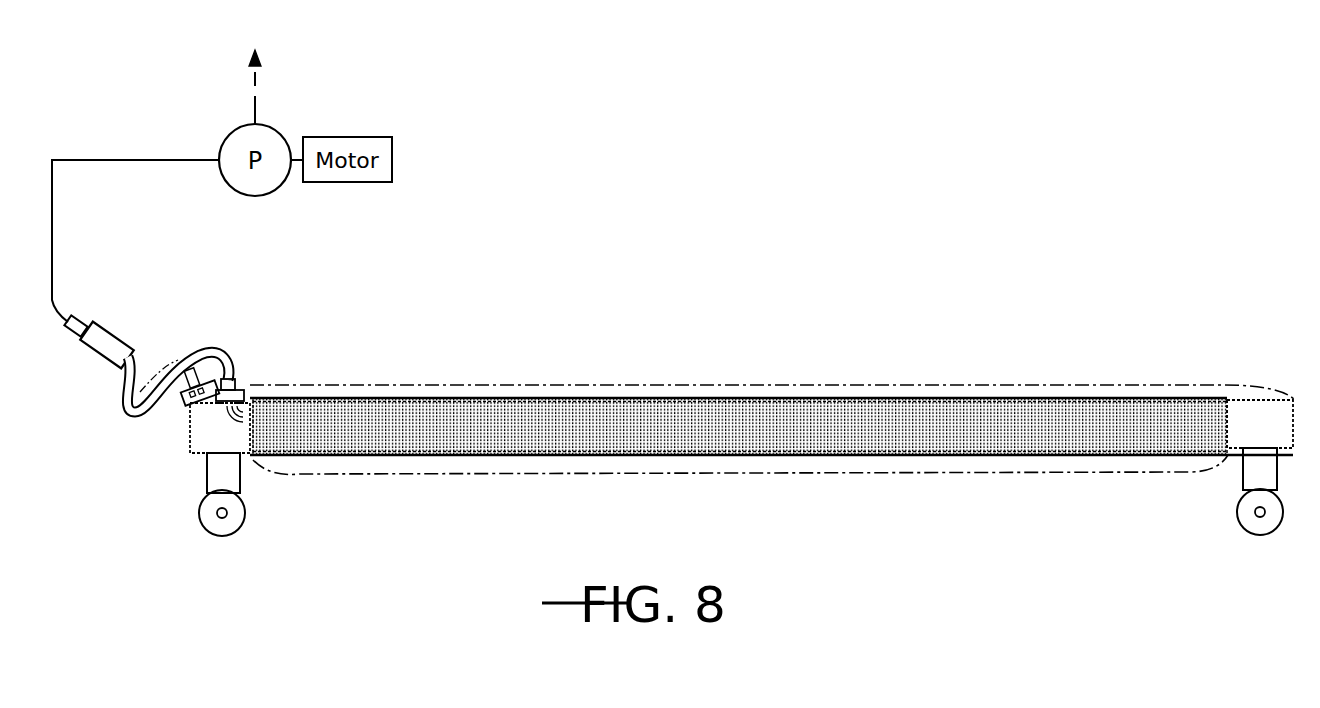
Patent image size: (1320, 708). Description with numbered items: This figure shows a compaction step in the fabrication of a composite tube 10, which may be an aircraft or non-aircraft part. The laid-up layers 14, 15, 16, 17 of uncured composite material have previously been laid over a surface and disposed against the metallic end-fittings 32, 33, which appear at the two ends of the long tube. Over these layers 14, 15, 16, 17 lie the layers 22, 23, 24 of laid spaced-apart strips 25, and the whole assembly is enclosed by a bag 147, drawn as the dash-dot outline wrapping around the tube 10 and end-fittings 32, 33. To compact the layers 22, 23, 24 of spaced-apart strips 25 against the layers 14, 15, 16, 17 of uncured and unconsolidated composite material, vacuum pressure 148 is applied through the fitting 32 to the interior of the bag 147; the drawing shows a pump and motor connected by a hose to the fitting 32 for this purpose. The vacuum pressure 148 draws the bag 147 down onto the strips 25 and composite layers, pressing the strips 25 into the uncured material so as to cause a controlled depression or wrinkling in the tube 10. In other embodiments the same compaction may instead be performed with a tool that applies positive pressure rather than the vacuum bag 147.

The composite tube 10 is at (771, 365).
The layer of uncured composite material 14 is at (771, 365).
The layer of uncured composite material 15 is at (771, 365).
The layer of uncured composite material 16 is at (771, 365).
The layer of uncured composite material 17 is at (771, 365).
The layer of spaced-apart strips 22 is at (771, 365).
The layer of spaced-apart strips 23 is at (771, 365).
The layer of spaced-apart strips 24 is at (771, 365).
The spaced-apart strips 25 is at (900, 417).
The metallic end-fitting 32 is at (185, 430).
The metallic end-fitting 33 is at (1250, 410).
The bag 147 is at (762, 388).
The vacuum pressure 148 is at (243, 407).